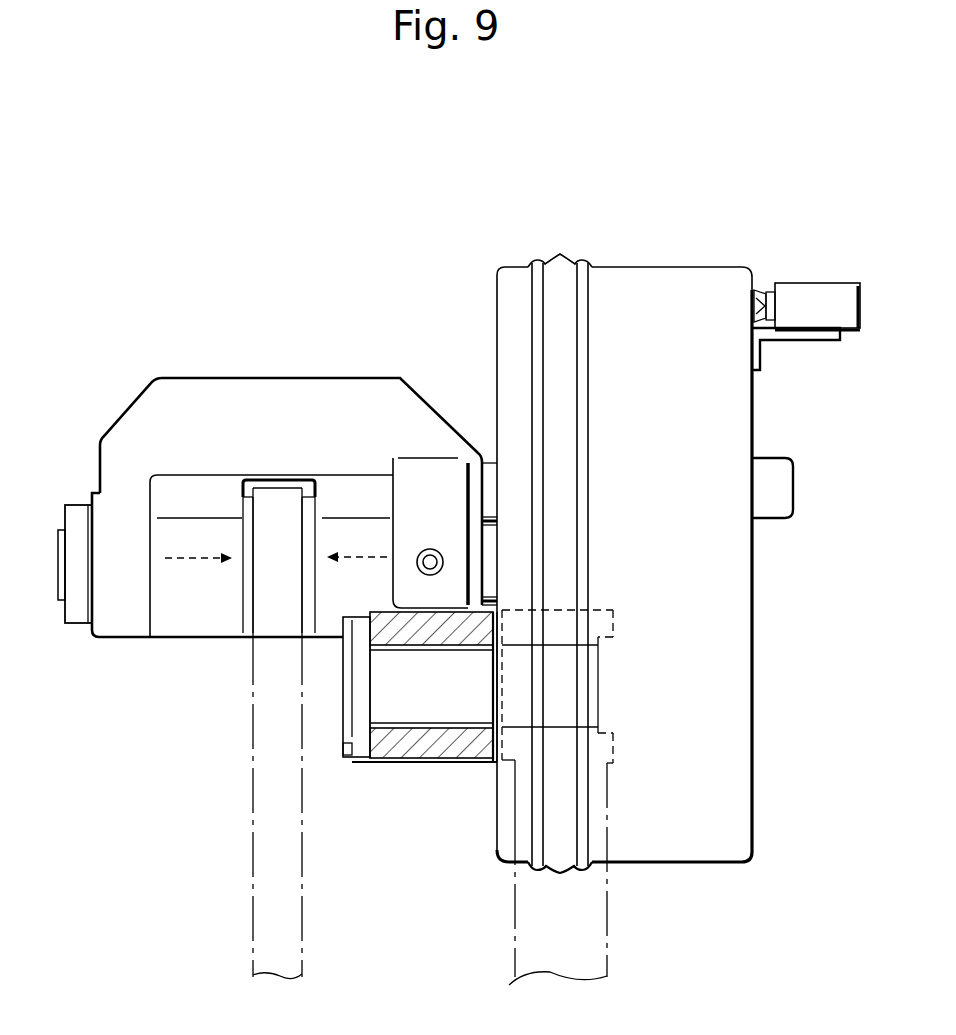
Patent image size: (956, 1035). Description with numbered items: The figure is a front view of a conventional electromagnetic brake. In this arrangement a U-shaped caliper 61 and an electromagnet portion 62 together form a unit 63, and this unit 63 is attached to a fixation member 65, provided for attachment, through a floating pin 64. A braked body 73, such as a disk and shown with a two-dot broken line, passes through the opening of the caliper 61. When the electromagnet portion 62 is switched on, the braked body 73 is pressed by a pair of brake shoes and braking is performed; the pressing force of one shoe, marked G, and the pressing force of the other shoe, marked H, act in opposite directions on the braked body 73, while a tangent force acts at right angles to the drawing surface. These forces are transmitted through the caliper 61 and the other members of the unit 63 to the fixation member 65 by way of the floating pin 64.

The U-shaped caliper 61 is at (185, 376).
The electromagnet portion 62 is at (647, 285).
The unit 63 is at (490, 210).
The floating pin 64 is at (442, 705).
The fixation member 65 is at (608, 951).
The braked body 73 is at (252, 780).